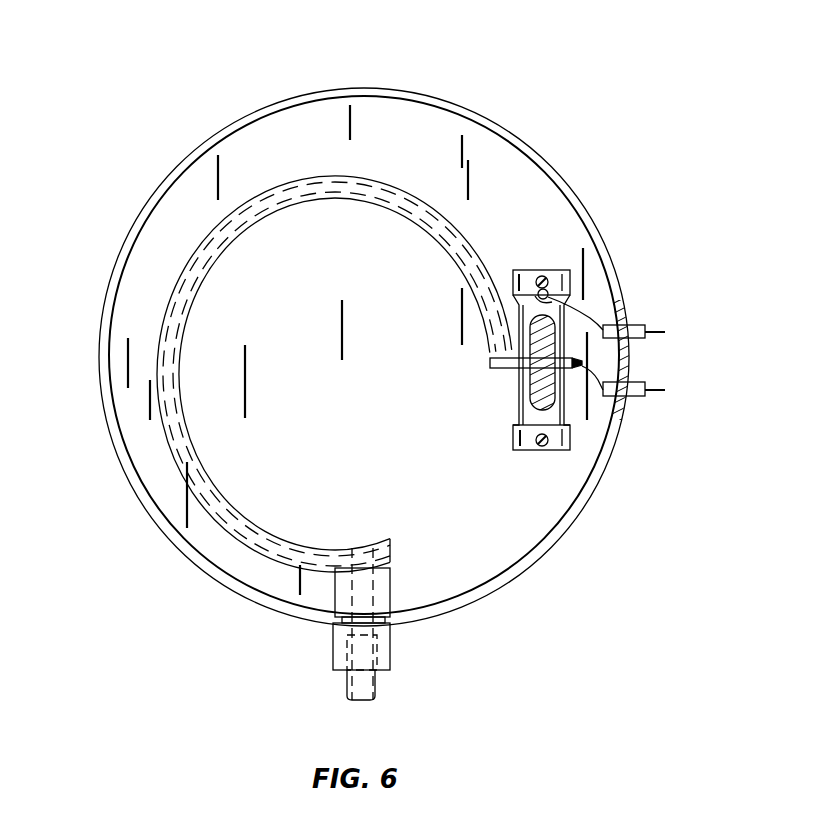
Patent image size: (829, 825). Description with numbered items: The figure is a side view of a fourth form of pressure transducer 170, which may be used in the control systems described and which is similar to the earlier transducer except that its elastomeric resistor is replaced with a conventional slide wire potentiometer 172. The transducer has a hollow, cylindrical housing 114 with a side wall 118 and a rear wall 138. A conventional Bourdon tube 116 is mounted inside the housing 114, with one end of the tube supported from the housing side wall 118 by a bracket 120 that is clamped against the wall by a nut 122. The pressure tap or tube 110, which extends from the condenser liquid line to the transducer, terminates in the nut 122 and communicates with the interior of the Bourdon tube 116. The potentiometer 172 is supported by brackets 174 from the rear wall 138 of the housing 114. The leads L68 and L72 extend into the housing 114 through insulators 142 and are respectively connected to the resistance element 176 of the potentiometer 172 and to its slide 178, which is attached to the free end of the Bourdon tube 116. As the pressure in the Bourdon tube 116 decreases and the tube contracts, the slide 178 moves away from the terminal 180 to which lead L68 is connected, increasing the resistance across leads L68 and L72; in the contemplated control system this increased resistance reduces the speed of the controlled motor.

The transducer 170 is at (134, 164).
The housing 114 is at (333, 88).
The housing side wall 118 is at (530, 151).
The rear wall 138 is at (165, 234).
The Bourdon tube 116 is at (224, 240).
The bracket 120 is at (392, 586).
The nut 122 is at (392, 650).
The pressure tap or tube 110 is at (377, 688).
The slide wire potentiometer 172 is at (478, 398).
The brackets 174 is at (536, 267).
The resistance element 176 is at (527, 400).
The slide 178 is at (490, 360).
The terminal 180 is at (548, 294).
The insulators 142 is at (641, 324).
The lead L72 is at (666, 332).
The lead L68 is at (666, 390).